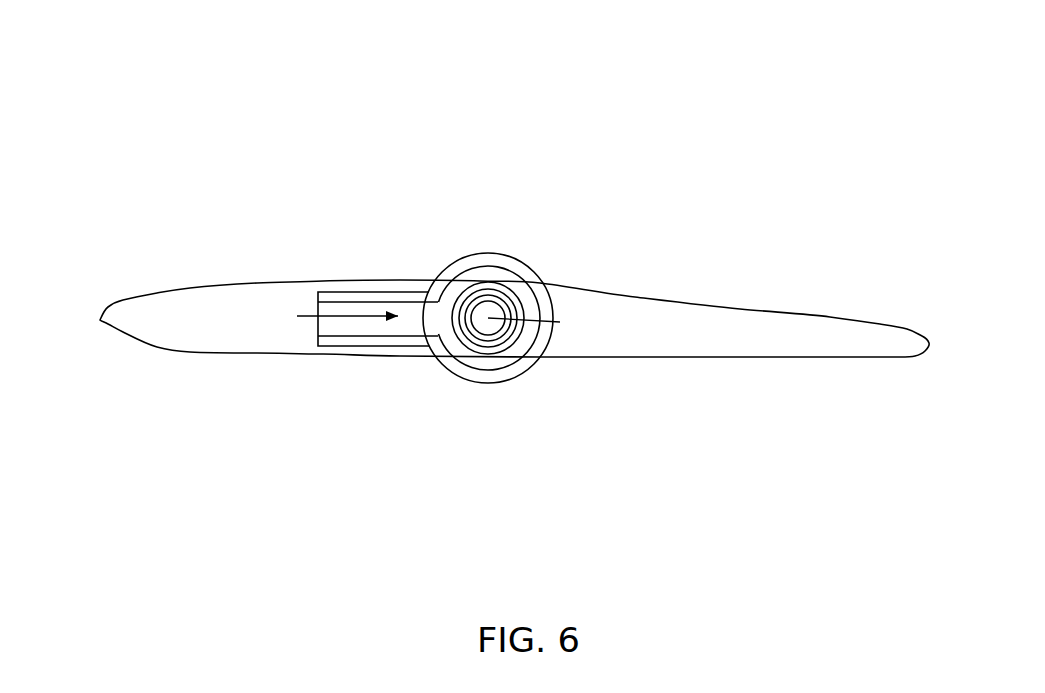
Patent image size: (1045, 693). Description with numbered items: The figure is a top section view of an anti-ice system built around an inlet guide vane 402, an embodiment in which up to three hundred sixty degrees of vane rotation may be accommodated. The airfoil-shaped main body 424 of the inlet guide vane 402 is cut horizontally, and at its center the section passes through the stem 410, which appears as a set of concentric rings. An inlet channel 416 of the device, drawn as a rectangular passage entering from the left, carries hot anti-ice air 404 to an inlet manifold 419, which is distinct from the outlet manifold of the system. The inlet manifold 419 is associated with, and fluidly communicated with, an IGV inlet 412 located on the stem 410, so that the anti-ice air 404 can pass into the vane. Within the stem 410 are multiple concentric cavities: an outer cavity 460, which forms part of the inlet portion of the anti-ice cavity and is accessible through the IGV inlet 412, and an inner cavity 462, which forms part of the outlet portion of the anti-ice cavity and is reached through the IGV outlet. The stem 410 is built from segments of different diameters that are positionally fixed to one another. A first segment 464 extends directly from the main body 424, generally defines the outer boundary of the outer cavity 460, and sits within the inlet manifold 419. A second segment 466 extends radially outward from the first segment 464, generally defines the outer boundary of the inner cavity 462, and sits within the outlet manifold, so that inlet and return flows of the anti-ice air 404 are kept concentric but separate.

The inlet guide vane 402 is at (130, 283).
The anti-ice air 404 is at (318, 324).
The stem 410 is at (352, 490).
The IGV inlet 412 is at (443, 318).
The inlet channel 416 is at (337, 328).
The inlet manifold 419 is at (488, 318).
The main body 424 is at (947, 275).
The outer cavity 460 is at (480, 273).
The inner cavity 462 is at (522, 127).
The first segment 464 is at (533, 325).
The second segment 466 is at (513, 306).